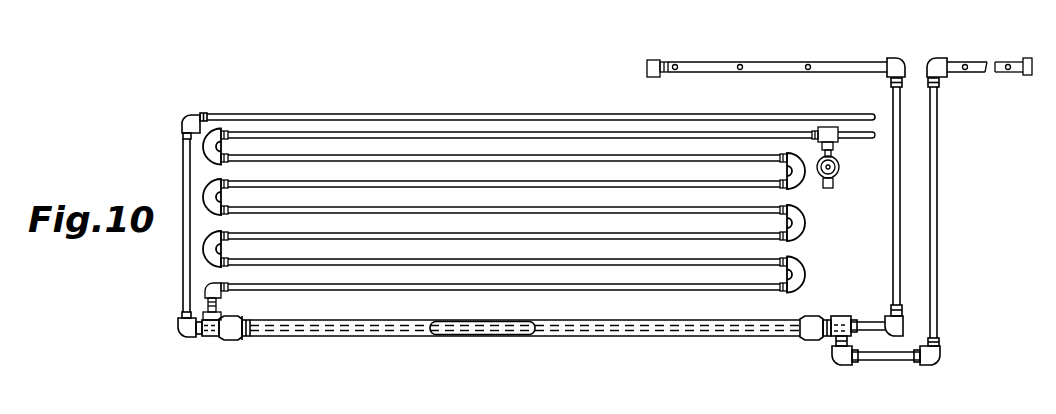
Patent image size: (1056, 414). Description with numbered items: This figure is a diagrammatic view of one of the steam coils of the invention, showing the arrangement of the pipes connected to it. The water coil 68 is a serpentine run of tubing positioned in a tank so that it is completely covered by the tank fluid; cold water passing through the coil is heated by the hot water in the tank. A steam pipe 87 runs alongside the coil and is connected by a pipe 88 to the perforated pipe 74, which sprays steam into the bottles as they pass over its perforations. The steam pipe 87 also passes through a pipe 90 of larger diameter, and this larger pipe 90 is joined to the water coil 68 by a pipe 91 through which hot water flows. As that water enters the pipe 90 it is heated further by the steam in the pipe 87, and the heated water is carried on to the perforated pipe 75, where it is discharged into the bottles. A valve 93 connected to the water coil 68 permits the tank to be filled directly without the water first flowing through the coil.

The water coil 68 is at (297, 135).
The perforated pipe 74 is at (779, 66).
The perforated pipe 75 is at (1000, 73).
The steam pipe 87 is at (512, 117).
The pipe 88 is at (900, 182).
The pipe 90 is at (360, 340).
The pipe 91 is at (216, 307).
The valve 93 is at (840, 171).